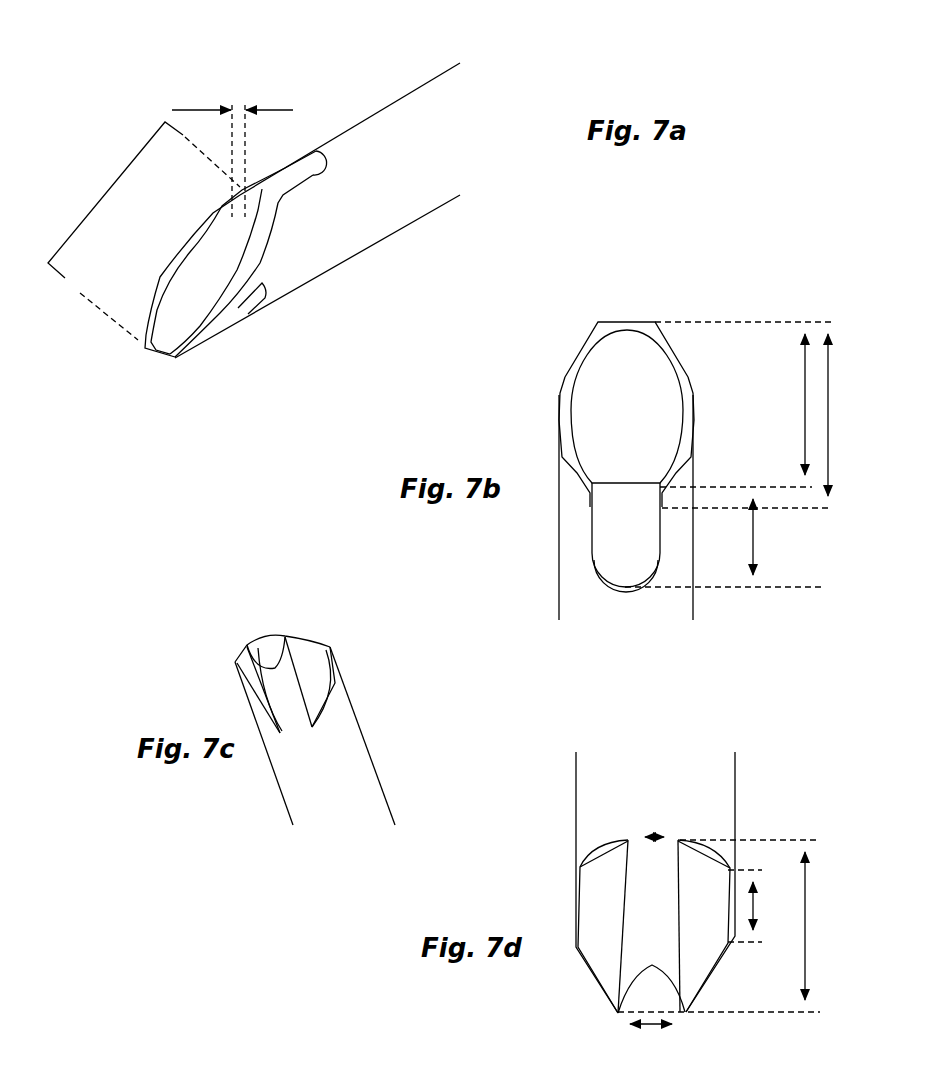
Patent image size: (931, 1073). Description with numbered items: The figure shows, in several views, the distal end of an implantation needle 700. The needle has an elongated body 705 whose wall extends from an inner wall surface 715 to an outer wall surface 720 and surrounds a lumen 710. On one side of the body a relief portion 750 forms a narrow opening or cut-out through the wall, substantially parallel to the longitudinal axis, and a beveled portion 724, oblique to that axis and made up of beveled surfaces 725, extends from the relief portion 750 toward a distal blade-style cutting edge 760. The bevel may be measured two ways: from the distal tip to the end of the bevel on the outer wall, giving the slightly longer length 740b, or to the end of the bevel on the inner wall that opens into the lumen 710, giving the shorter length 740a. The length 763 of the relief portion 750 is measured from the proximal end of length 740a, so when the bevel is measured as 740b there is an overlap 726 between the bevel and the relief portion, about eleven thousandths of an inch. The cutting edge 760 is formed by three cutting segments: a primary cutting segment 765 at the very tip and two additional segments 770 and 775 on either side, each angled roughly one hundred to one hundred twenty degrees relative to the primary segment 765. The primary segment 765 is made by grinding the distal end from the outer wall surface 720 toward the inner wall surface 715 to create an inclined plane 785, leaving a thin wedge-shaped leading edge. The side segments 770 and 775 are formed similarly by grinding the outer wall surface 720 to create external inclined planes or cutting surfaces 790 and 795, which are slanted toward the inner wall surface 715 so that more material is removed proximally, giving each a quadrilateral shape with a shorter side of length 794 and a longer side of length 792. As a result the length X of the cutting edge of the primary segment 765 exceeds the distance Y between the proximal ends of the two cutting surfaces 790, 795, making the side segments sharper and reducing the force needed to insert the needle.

In FIG. 7A, the implantation needle 700 is at (500, 151).
In FIG. 7A, the elongated body 705 is at (400, 92).
In FIG. 7B, the elongated body 705 is at (626, 589).
In FIG. 7A, the lumen 710 is at (202, 275).
In FIG. 7B, the lumen 710 is at (627, 406).
In FIG. 7A, the inner wall surface 715 is at (264, 193).
In FIG. 7A, the outer wall surface 720 is at (264, 168).
In FIG. 7A, the beveled portion 724 is at (108, 192).
In FIG. 7A, the beveled surfaces 725 is at (244, 229).
In FIG. 7A, the overlap 726 is at (232, 153).
In FIG. 7B, the bevel length (inner surface) 740a is at (743, 404).
In FIG. 7B, the bevel length (outer surface) 740b is at (769, 421).
In FIG. 7A, the relief portion 750 is at (313, 180).
In FIG. 7B, the relief portion 750 is at (590, 543).
In FIG. 7C, the relief portion 750 is at (392, 684).
In FIG. 7A, the blade-style cutting edge 760 is at (142, 367).
In FIG. 7B, the blade-style cutting edge 760 is at (740, 308).
In FIG. 7B, the length of relief portion 763 is at (723, 543).
In FIG. 7A, the primary cutting segment 765 is at (152, 352).
In FIG. 7B, the primary cutting segment 765 is at (630, 318).
In FIG. 7D, the primary cutting segment 765 is at (620, 1012).
In FIG. 7A, the cutting segment 770 is at (150, 323).
In FIG. 7B, the cutting segment 770 is at (688, 350).
In FIG. 7A, the cutting segment 775 is at (192, 342).
In FIG. 7B, the cutting segment 775 is at (574, 346).
In FIG. 7C, the inclined plane 785 is at (272, 645).
In FIG. 7D, the inclined plane 785 is at (638, 995).
In FIG. 7C, the external inclined plane (cutting surface) 790 is at (247, 670).
In FIG. 7D, the external inclined plane (cutting surface) 790 is at (695, 862).
In FIG. 7D, the length of longer side of cutting surface 792 is at (761, 920).
In FIG. 7D, the length of side of cutting surface 794 is at (758, 906).
In FIG. 7A, the external inclined plane (cutting surface) 795 is at (250, 322).
In FIG. 7C, the external inclined plane (cutting surface) 795 is at (310, 672).
In FIG. 7D, the external inclined plane (cutting surface) 795 is at (594, 927).
In FIG. 7D, the length of cutting edge of primary segment X is at (651, 1040).
In FIG. 7D, the distance between proximal ends of inclined planes Y is at (654, 819).